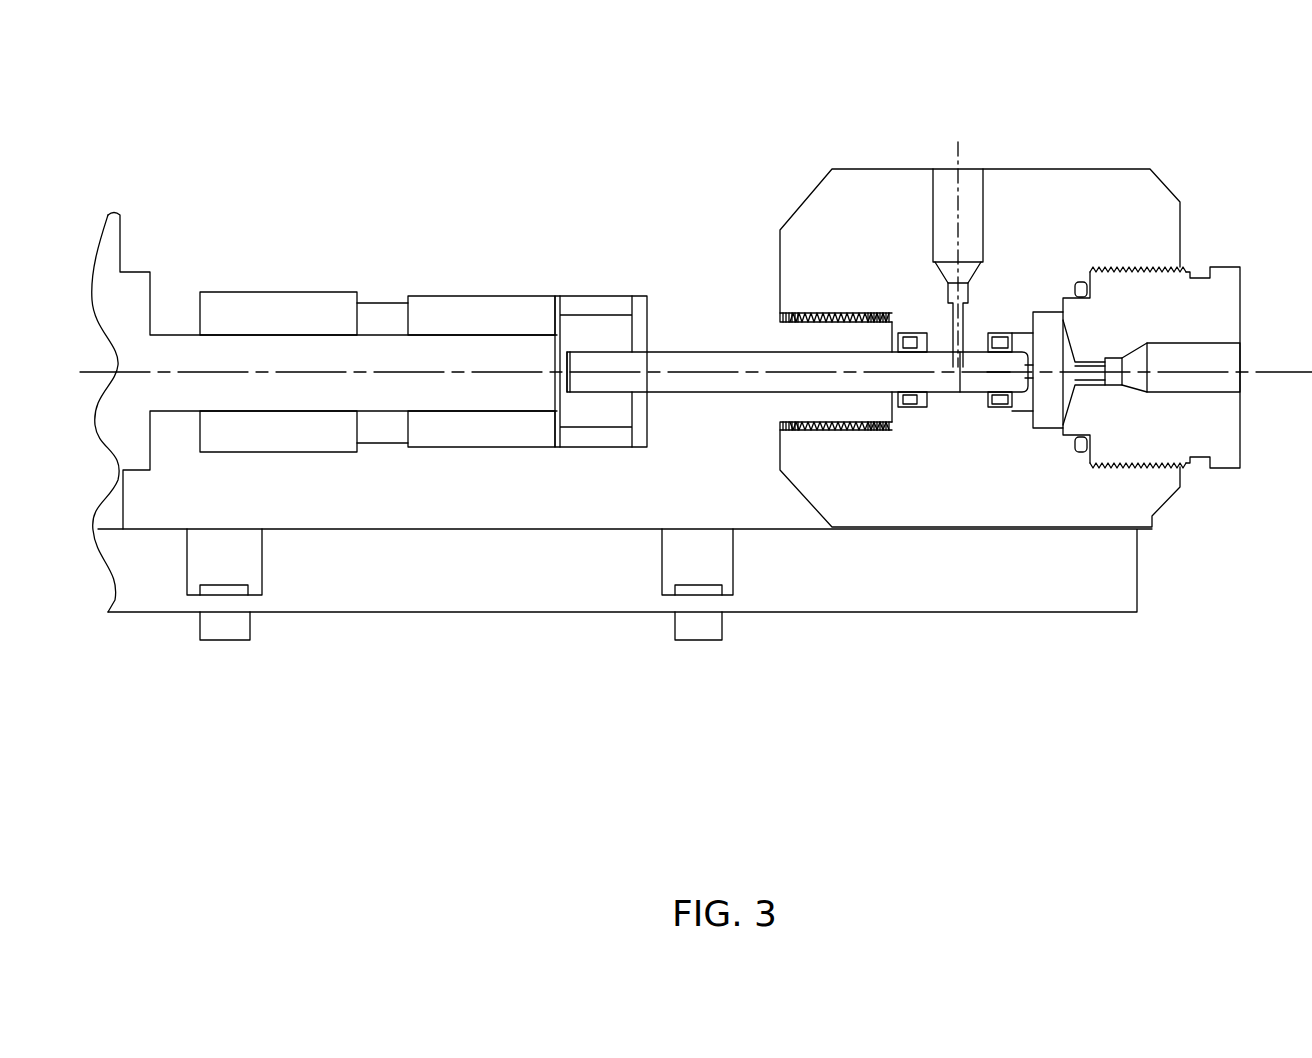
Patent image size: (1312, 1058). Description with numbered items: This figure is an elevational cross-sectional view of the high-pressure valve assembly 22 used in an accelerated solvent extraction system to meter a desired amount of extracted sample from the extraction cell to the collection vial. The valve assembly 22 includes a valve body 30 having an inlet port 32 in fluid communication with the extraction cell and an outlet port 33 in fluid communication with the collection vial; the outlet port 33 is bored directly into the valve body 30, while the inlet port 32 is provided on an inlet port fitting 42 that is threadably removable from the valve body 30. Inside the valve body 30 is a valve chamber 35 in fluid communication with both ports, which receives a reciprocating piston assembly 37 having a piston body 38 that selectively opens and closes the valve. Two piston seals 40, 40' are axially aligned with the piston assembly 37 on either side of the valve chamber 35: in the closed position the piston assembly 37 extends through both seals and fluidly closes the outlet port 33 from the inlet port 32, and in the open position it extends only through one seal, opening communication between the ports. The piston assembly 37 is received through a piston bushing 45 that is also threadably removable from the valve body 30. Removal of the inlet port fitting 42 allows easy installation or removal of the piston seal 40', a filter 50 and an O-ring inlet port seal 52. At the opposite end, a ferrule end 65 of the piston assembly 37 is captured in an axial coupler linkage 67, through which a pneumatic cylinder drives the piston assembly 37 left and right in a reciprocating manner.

The valve assembly 22 is at (423, 662).
The valve body 30 is at (1052, 173).
The inlet port 32 is at (1212, 390).
The outlet port 33 is at (940, 190).
The valve chamber 35 is at (968, 395).
The piston assembly 37 is at (687, 408).
The piston body 38 is at (745, 383).
The piston seal 40 is at (914, 338).
The piston seal 40' is at (1010, 339).
The inlet port fitting 42 is at (1225, 440).
The piston bushing 45 is at (817, 408).
The filter 50 is at (1052, 415).
The O-ring inlet port seal 52 is at (1080, 283).
The ferrule end 65 is at (583, 412).
The axial coupler linkage 67 is at (508, 297).